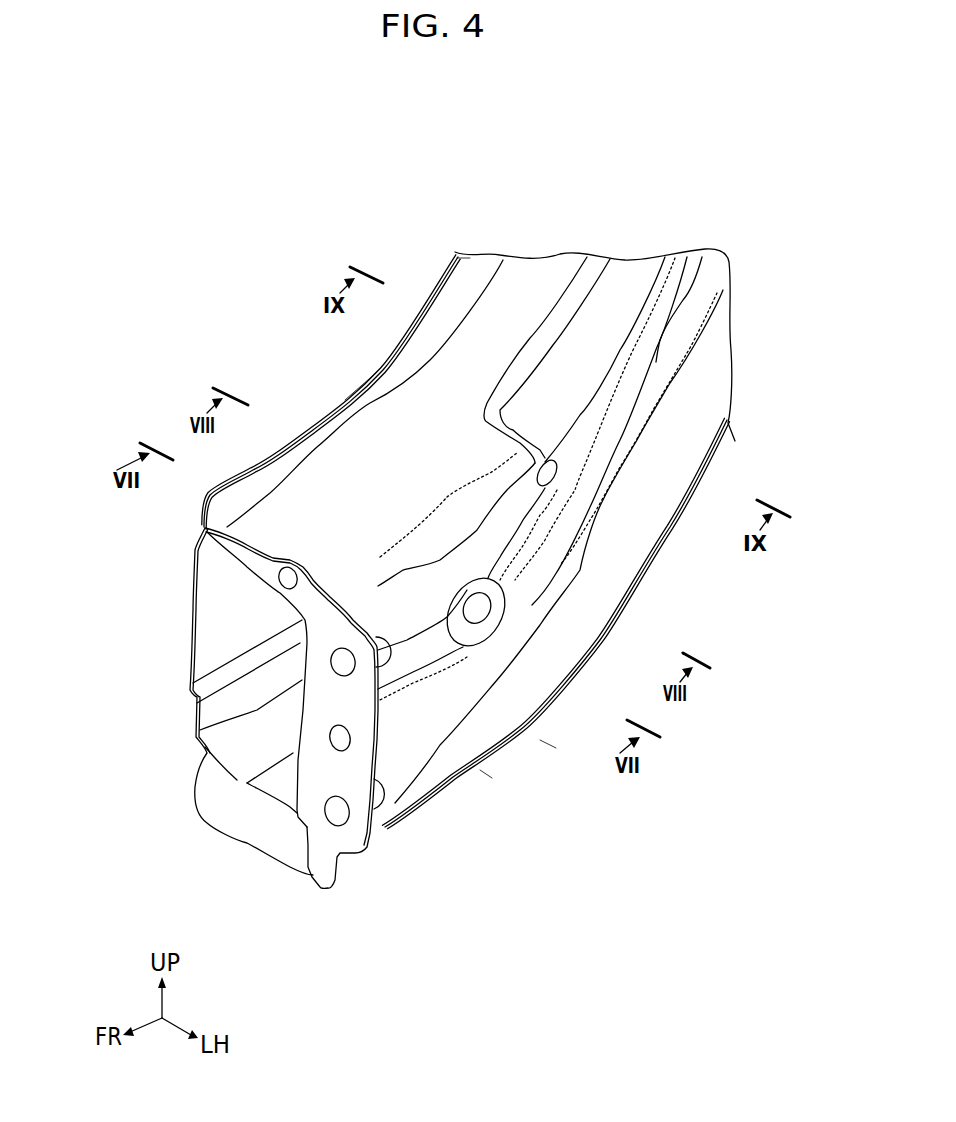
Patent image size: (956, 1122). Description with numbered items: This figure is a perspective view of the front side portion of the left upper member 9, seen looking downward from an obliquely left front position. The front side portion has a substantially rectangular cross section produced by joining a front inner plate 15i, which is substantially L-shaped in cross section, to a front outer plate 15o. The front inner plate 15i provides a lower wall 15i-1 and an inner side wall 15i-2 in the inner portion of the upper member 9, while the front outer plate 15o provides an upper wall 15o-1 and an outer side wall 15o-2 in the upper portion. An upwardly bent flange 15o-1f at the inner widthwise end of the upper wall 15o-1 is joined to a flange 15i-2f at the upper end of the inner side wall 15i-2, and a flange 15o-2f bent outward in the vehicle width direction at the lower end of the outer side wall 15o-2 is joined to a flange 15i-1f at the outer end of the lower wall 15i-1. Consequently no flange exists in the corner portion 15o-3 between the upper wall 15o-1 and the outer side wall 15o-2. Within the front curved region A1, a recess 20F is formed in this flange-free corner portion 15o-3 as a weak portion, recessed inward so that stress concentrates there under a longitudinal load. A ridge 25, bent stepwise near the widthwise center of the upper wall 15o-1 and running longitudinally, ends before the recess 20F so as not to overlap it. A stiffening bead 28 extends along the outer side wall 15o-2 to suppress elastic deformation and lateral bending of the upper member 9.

The upper member 9 is at (618, 218).
The front outer plate 15o is at (652, 262).
The upper wall 15o-1 is at (347, 478).
The flange 15o-1f is at (436, 329).
The outer side wall 15o-2 is at (430, 706).
The flange 15o-2f is at (497, 723).
The corner portion 15o-3 is at (378, 590).
The front inner plate 15i is at (172, 635).
The lower wall 15i-1 is at (273, 783).
The flange 15i-1f is at (487, 763).
The inner side wall 15i-2 is at (220, 620).
The flange 15i-2f is at (365, 385).
The ridge 25 is at (565, 311).
The stiffening bead 28 is at (583, 499).
The recess 20F is at (453, 533).
The front curved region A1 is at (545, 738).